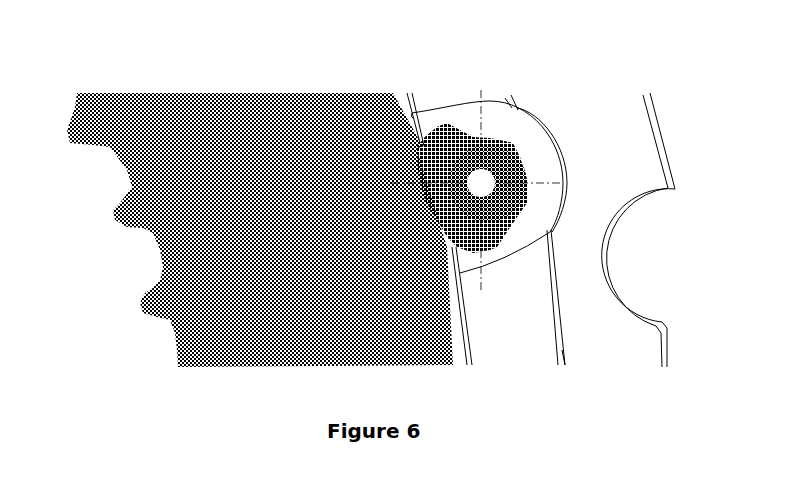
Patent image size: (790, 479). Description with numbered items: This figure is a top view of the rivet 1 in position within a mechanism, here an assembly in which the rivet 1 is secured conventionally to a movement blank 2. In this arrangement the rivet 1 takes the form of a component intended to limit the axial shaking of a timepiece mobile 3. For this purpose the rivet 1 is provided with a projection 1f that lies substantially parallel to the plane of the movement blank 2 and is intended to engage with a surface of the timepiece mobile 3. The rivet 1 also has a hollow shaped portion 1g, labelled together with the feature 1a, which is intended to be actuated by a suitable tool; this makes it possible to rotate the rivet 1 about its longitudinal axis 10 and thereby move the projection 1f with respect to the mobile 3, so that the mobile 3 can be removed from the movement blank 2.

The rivet 1 is at (441, 147).
The hole of the holder 1a is at (514, 119).
The hollow shaped portion 1g is at (485, 171).
The projection 1f is at (420, 204).
The movement blank 2 is at (618, 130).
The timepiece mobile 3 is at (244, 130).
The longitudinal axis 10 is at (486, 187).